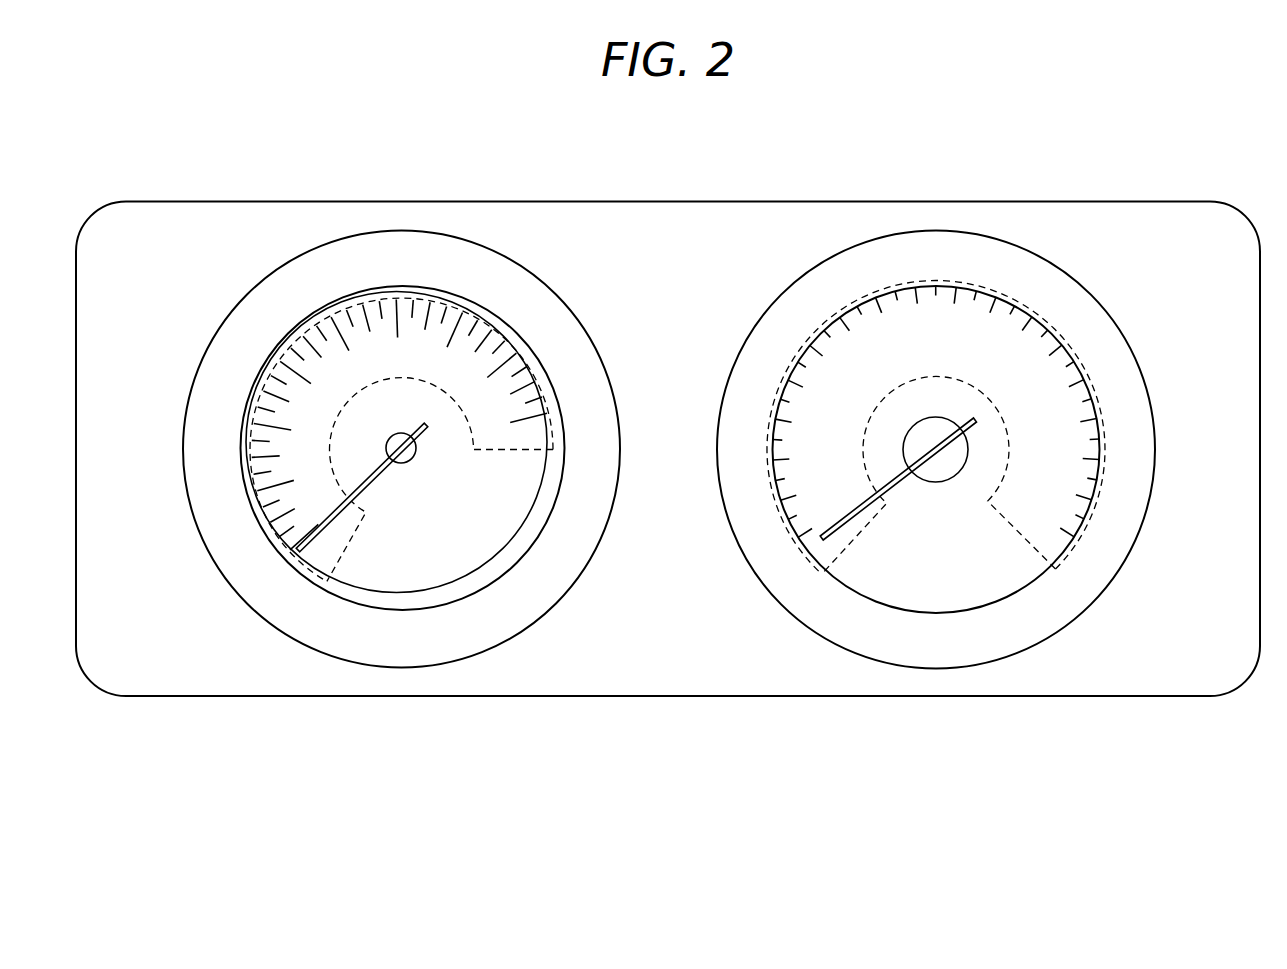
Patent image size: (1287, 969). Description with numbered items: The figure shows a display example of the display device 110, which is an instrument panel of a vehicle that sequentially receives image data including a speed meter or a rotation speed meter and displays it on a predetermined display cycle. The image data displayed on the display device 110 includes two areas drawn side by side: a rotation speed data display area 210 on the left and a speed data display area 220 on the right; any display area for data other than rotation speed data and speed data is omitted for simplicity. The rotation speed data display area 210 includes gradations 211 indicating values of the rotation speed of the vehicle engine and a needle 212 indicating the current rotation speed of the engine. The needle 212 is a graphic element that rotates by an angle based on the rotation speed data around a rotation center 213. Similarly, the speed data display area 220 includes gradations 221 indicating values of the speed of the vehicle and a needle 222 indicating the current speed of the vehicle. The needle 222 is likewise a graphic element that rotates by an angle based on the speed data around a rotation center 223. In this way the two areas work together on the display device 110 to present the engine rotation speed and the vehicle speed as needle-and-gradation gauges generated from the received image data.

The display device 110 is at (838, 201).
The rotation speed data display area 210 is at (296, 648).
The gradations 211 is at (248, 504).
The needle 212 is at (382, 481).
The rotation center 213 is at (419, 452).
The speed data display area 220 is at (832, 648).
The gradations 221 is at (782, 505).
The needle 222 is at (916, 500).
The rotation center 223 is at (985, 512).